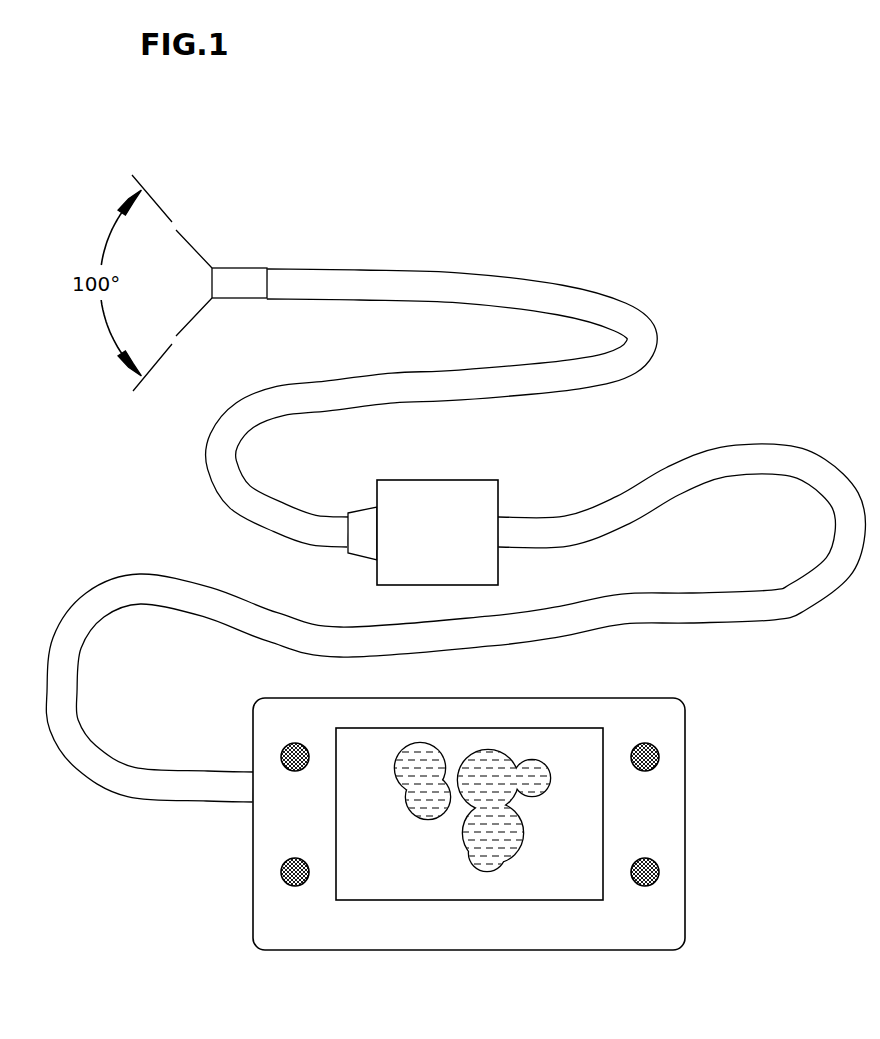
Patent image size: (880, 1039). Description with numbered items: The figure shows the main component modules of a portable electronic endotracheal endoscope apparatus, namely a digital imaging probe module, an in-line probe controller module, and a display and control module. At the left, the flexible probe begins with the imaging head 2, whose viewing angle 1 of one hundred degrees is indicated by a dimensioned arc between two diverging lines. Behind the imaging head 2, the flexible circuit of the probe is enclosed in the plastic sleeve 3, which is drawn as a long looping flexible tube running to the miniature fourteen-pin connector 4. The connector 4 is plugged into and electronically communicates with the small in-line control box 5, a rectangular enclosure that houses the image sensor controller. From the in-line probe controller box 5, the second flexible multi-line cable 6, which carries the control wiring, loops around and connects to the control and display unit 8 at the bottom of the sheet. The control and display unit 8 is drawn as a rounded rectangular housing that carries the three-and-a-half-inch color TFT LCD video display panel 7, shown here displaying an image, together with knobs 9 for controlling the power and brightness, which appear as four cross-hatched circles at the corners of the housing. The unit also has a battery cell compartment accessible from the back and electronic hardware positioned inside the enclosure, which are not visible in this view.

The viewing angle 1 is at (176, 229).
The imaging head 2 is at (245, 273).
The plastic sleeve 3 is at (460, 278).
The miniature 14-pin connector 4 is at (365, 523).
The in-line control box 5 is at (447, 539).
The second flexible multi-line cable 6 is at (700, 612).
The color TFT LCD video display panel 7 is at (360, 890).
The control and display unit 8 is at (470, 945).
The knobs 9 is at (283, 870).